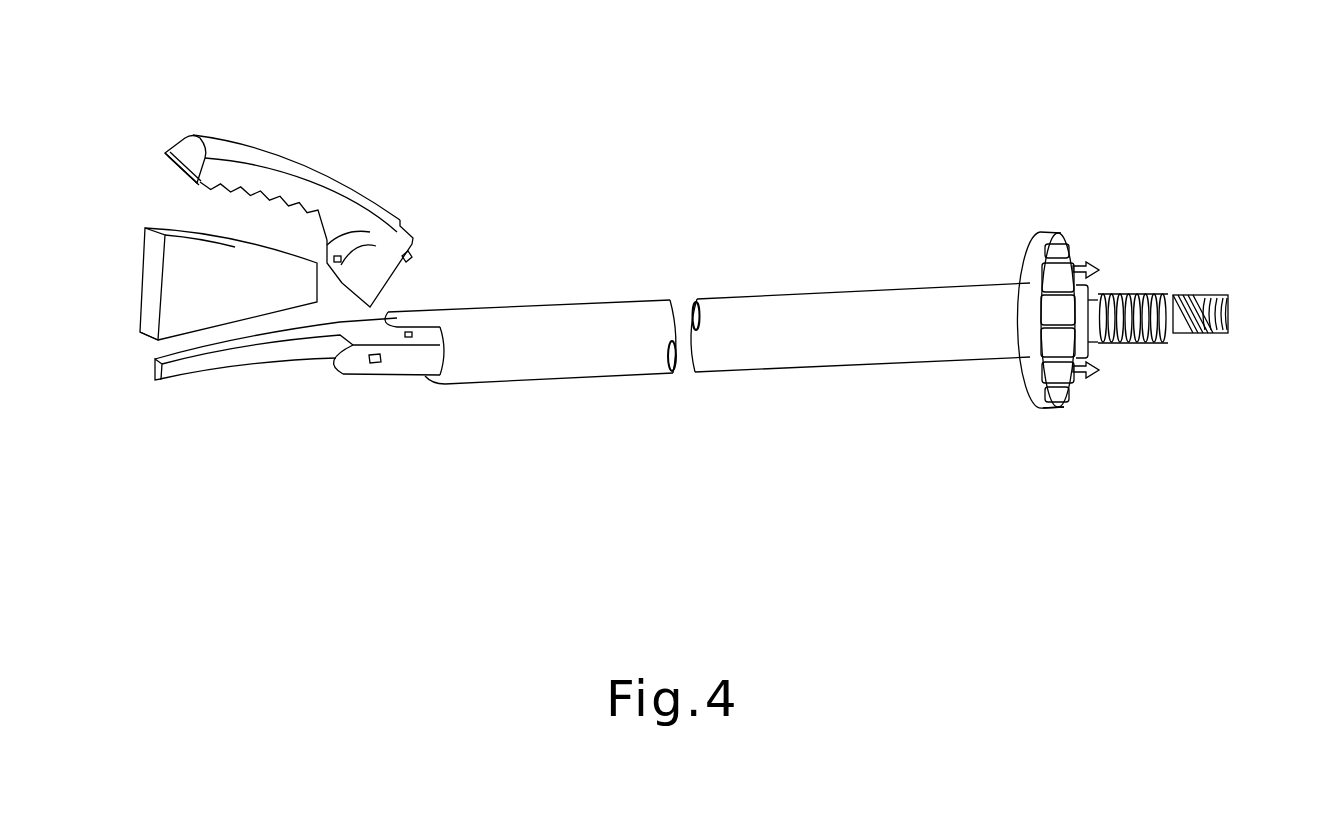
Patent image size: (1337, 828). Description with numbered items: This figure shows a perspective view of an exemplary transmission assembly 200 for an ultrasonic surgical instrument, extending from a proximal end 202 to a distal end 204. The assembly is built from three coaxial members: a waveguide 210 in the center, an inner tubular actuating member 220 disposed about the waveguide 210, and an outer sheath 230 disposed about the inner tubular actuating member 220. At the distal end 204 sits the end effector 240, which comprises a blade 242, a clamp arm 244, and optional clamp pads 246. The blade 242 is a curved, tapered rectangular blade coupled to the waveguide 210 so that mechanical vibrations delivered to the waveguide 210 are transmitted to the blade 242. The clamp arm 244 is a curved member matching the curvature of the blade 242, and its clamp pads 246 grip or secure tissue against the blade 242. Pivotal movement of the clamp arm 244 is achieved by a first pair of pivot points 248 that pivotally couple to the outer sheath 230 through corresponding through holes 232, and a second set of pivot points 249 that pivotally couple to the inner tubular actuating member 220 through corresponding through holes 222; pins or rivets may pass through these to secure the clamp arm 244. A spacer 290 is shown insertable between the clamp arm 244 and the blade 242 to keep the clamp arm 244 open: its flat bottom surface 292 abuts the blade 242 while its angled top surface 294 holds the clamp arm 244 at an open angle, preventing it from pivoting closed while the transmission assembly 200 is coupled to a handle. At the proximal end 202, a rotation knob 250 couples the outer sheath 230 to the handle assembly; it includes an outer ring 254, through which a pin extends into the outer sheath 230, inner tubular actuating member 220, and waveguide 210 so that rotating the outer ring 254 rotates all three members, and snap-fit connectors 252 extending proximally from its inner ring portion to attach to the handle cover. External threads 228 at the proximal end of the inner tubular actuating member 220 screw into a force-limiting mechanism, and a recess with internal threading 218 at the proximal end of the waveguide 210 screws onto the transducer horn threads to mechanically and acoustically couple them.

The transmission assembly 200 is at (805, 103).
The proximal end 202 is at (1203, 251).
The distal end 204 is at (250, 426).
The waveguide 210 is at (1198, 336).
The internal threading 218 is at (1212, 312).
The inner tubular actuating member 220 is at (402, 378).
The through holes 222 is at (375, 365).
The external threads 228 is at (1147, 342).
The outer sheath 230 is at (805, 370).
The through holes 232 is at (417, 333).
The end effector 240 is at (156, 422).
The blade 242 is at (237, 365).
The clamp arm 244 is at (303, 158).
The clamp pads 246 is at (180, 172).
The first pair of pivot points 248 is at (422, 265).
The second set of pivot points 249 is at (338, 256).
The rotation knob 250 is at (1045, 232).
The connectors 252 is at (1088, 260).
The outer ring 254 is at (1045, 408).
The spacer 290 is at (140, 287).
The bottom surface 292 is at (150, 338).
The top surface 294 is at (220, 252).